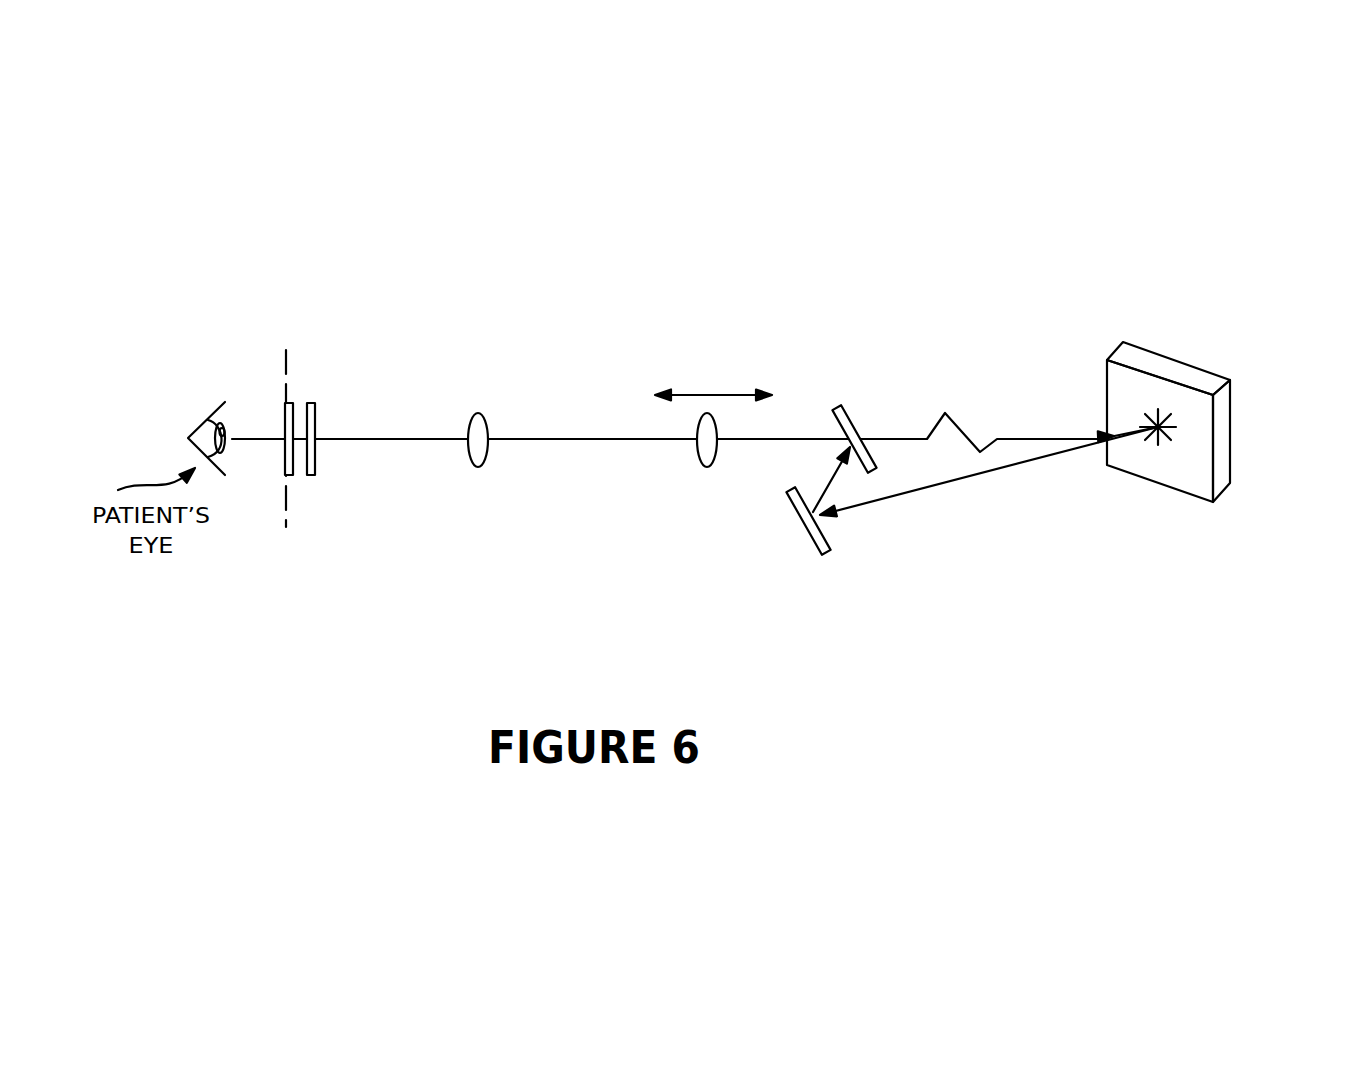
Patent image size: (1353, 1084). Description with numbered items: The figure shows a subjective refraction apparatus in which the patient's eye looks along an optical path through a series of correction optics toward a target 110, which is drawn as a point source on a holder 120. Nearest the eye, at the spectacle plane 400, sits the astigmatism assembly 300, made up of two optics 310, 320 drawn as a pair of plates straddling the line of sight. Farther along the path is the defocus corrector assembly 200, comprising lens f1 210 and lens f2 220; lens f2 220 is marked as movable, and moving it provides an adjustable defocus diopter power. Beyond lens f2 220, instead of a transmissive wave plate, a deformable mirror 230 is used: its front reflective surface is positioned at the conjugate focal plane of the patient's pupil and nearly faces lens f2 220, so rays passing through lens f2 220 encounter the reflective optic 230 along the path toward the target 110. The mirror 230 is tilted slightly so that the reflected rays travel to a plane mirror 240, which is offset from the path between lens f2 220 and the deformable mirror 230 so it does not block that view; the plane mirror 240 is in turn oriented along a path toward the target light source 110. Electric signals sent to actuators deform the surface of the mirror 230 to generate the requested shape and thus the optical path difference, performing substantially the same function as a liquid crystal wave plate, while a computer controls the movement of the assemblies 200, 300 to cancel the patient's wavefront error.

The target 110 is at (1163, 415).
The sample holder 120 is at (1234, 418).
The defocus corrector assembly 200 is at (636, 500).
The lens f1 210 is at (486, 412).
The lens f2 220 is at (722, 426).
The deformable mirror 230 is at (853, 392).
The plane mirror 240 is at (839, 562).
The astigmatism assembly 300 is at (342, 515).
The optic of the astigmatism assembly 310 is at (294, 398).
The optic of the astigmatism assembly 320 is at (321, 414).
The spectacle plane 400 is at (292, 375).